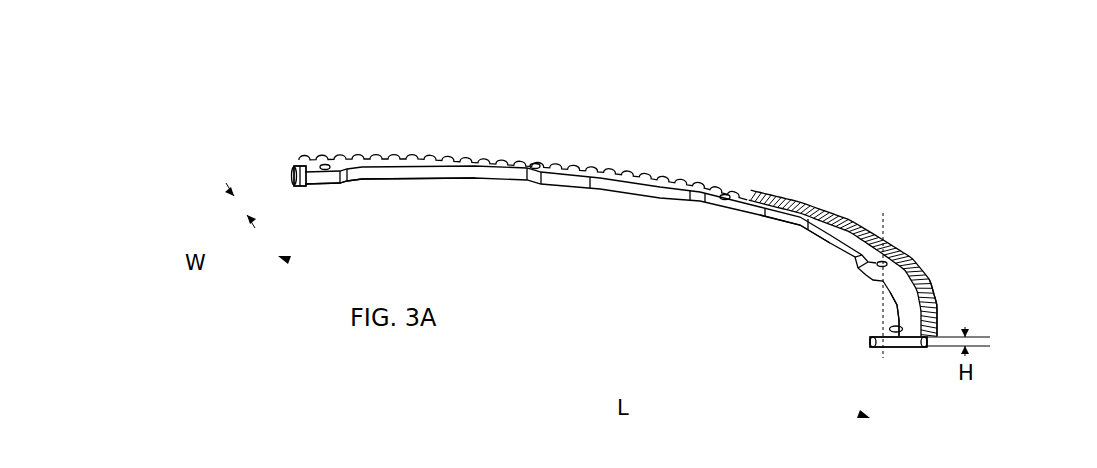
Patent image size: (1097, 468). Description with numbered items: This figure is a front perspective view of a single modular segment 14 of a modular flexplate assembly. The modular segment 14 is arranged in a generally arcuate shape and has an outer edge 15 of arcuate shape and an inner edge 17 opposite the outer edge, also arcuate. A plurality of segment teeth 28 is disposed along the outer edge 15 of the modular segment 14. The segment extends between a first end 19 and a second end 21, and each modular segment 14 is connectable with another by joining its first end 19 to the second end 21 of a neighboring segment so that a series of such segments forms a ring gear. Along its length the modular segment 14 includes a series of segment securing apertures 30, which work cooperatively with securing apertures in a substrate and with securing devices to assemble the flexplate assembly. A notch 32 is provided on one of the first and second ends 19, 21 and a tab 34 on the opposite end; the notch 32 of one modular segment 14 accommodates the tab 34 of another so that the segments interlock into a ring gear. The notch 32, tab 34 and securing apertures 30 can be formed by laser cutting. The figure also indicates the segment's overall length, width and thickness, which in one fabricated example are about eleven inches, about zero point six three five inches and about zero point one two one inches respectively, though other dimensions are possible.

The modular segment 14 is at (826, 107).
The outer edge 15 is at (930, 338).
The inner edge 17 is at (838, 244).
The first end 19 is at (893, 340).
The second end 21 is at (390, 323).
The segment teeth 28 is at (583, 165).
The segment securing apertures 30 is at (748, 210).
The notch 32 is at (299, 180).
The tab 34 is at (882, 352).